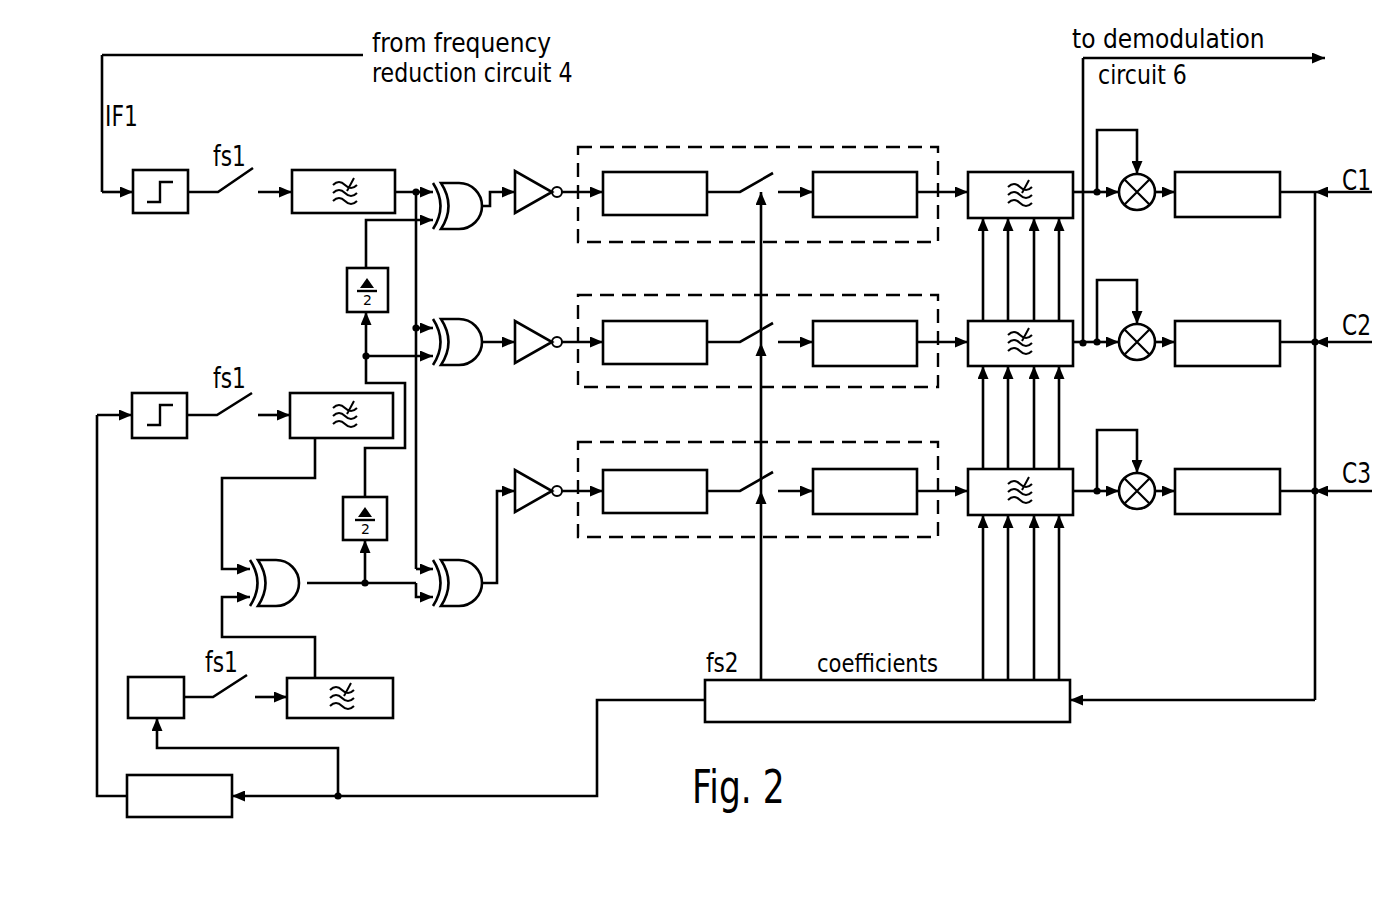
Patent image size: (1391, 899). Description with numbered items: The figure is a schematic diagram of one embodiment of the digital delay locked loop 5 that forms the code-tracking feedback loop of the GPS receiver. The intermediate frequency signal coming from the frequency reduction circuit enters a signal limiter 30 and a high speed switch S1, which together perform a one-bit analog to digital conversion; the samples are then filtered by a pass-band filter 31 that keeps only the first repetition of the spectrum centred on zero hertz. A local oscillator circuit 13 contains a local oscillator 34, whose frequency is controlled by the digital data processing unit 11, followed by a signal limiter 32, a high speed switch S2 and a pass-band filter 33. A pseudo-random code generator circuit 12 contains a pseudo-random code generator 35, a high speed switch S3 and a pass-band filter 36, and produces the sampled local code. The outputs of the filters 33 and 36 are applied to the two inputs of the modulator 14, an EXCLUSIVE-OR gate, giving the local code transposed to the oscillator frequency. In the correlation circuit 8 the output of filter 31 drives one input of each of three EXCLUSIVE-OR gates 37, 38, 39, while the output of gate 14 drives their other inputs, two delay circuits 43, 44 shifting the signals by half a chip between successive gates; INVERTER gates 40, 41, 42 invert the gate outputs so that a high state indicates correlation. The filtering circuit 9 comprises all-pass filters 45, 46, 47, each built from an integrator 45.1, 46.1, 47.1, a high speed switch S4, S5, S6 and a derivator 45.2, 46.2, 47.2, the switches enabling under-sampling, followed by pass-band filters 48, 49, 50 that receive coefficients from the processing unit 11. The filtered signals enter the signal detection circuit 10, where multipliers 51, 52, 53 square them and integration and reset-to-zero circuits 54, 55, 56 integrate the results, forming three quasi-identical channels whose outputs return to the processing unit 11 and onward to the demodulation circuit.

The delay locked loop 5 is at (1172, 770).
The correlation circuit 8 is at (455, 170).
The filtering circuit 9 is at (773, 118).
The signal detection circuit 10 is at (1195, 155).
The digital data processing unit 11 is at (963, 712).
The pseudo-random code generator circuit 12 is at (425, 722).
The local oscillator circuit 13 is at (133, 365).
The modulator 14 is at (292, 596).
The signal limiter 30 is at (157, 214).
The pass-band filter 31 is at (315, 186).
The signal limiter 32 is at (150, 438).
The pass-band filter 33 is at (312, 402).
The local oscillator 34 is at (152, 817).
The pseudo-random code generator 35 is at (148, 680).
The pass-band filter 36 is at (385, 710).
The EXCLUSIVE-OR gate 37 is at (456, 232).
The EXCLUSIVE-OR gate 38 is at (456, 365).
The EXCLUSIVE-OR gate 39 is at (458, 606).
The INVERTER gate 40 is at (528, 202).
The INVERTER gate 41 is at (528, 352).
The INVERTER gate 42 is at (528, 502).
The delay circuit 43 is at (347, 302).
The delay circuit 44 is at (343, 530).
The all-pass filter 45 is at (872, 147).
The all-pass filter 46 is at (873, 295).
The all-pass filter 47 is at (876, 442).
The integrator 45.1 is at (625, 206).
The integrator 46.1 is at (625, 356).
The integrator 47.1 is at (627, 504).
The derivator 45.2 is at (826, 208).
The derivator 46.2 is at (826, 358).
The derivator 47.2 is at (826, 506).
The pass-band filter 48 is at (1073, 207).
The pass-band filter 49 is at (1065, 352).
The pass-band filter 50 is at (1073, 507).
The multiplier 51 is at (1137, 212).
The multiplier 52 is at (1137, 362).
The multiplier 53 is at (1137, 511).
The integration and reset-to-zero circuit 54 is at (1230, 212).
The integration and reset-to-zero circuit 55 is at (1230, 362).
The integration and reset-to-zero circuit 56 is at (1230, 511).
The high speed switch S1 is at (238, 200).
The high speed switch S2 is at (225, 425).
The high speed switch S3 is at (237, 700).
The high speed switch S4 is at (755, 183).
The high speed switch S5 is at (755, 333).
The high speed switch S6 is at (755, 482).